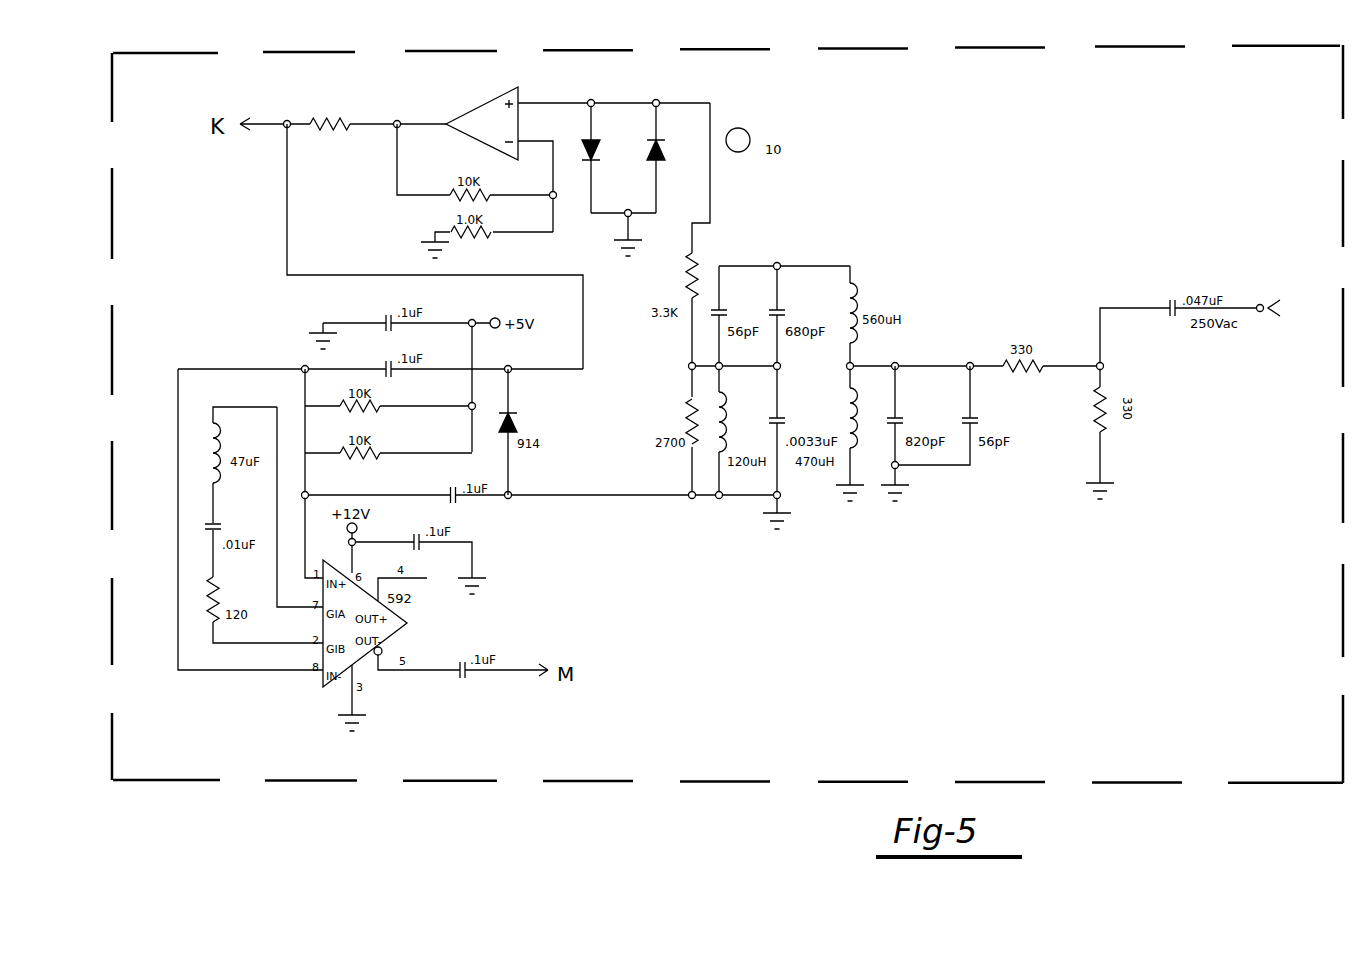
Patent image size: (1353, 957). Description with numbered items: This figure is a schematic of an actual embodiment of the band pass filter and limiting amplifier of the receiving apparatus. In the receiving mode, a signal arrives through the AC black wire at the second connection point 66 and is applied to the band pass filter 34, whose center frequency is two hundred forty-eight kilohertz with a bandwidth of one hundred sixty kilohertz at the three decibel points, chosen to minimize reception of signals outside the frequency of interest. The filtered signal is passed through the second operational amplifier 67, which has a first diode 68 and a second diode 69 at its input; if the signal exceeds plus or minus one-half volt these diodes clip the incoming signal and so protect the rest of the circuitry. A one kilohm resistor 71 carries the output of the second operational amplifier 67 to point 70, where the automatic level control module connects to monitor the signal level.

The band pass filter 34 is at (1113, 45).
The second connection point 66 is at (1260, 304).
The second operational amplifier 67 is at (483, 103).
The first diode 68 is at (595, 152).
The second diode 69 is at (665, 148).
The point 70 is at (283, 128).
The resistor 71 is at (352, 122).